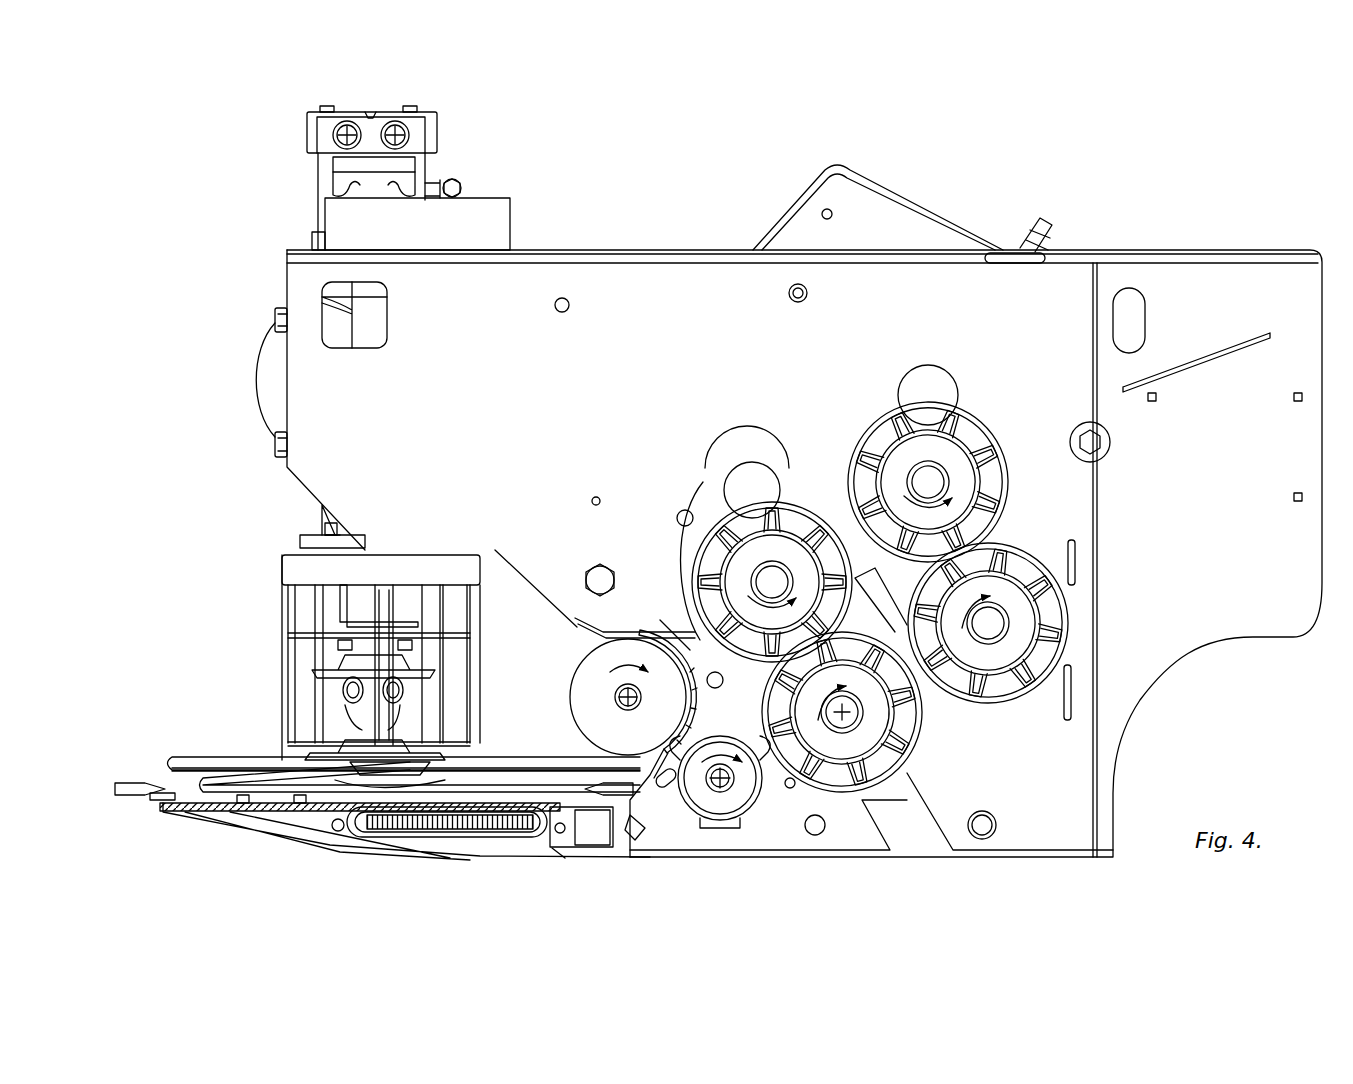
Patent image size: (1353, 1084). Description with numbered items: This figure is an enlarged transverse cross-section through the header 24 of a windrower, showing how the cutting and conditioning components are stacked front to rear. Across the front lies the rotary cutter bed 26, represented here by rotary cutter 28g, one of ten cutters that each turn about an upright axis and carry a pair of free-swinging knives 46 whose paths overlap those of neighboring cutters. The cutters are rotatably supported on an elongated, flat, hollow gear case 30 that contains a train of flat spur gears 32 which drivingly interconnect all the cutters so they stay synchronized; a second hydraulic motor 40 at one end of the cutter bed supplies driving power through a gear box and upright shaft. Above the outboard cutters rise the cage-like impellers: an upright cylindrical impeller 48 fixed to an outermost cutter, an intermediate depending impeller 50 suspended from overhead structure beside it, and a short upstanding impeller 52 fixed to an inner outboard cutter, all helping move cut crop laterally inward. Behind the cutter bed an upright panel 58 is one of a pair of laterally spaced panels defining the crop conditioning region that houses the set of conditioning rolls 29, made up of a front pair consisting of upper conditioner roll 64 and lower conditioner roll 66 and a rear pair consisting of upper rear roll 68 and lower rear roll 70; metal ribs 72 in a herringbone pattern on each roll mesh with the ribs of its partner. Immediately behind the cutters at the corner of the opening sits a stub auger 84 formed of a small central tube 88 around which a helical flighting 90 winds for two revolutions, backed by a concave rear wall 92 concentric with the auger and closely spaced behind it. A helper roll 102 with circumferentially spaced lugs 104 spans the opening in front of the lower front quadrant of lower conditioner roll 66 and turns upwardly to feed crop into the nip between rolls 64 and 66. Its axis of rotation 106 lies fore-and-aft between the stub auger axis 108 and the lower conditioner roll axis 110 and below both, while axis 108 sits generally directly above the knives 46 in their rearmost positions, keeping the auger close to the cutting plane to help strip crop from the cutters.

The header 24 is at (1100, 208).
The rotary cutter bed 26 is at (260, 846).
The rotary cutter 28g is at (150, 765).
The set of conditioning rolls 29 is at (984, 368).
The gear case 30 is at (585, 830).
The spur gears 32 is at (420, 822).
The second hydraulic motor 40 is at (397, 110).
The knives 46 is at (125, 797).
The impeller 48 is at (287, 605).
The intermediate impeller 50 is at (300, 690).
The short impeller 52 is at (342, 724).
The panel 58 is at (618, 270).
The upper conditioner roll 64 is at (735, 528).
The lower conditioner roll 66 is at (893, 752).
The upper rear roll 68 is at (895, 416).
The lower rear roll 70 is at (997, 690).
The ribs 72 is at (758, 508).
The stub auger 84 is at (555, 670).
The central tube 88 is at (622, 702).
The helical flighting 90 is at (578, 700).
The rear wall 92 is at (628, 684).
The helper roll 102 is at (694, 818).
The lugs 104 is at (720, 790).
The axis of rotation of helper roll 106 is at (735, 792).
The axis of rotation of stub augers 108 is at (640, 704).
The axis of rotation of lower conditioner roll 110 is at (843, 712).